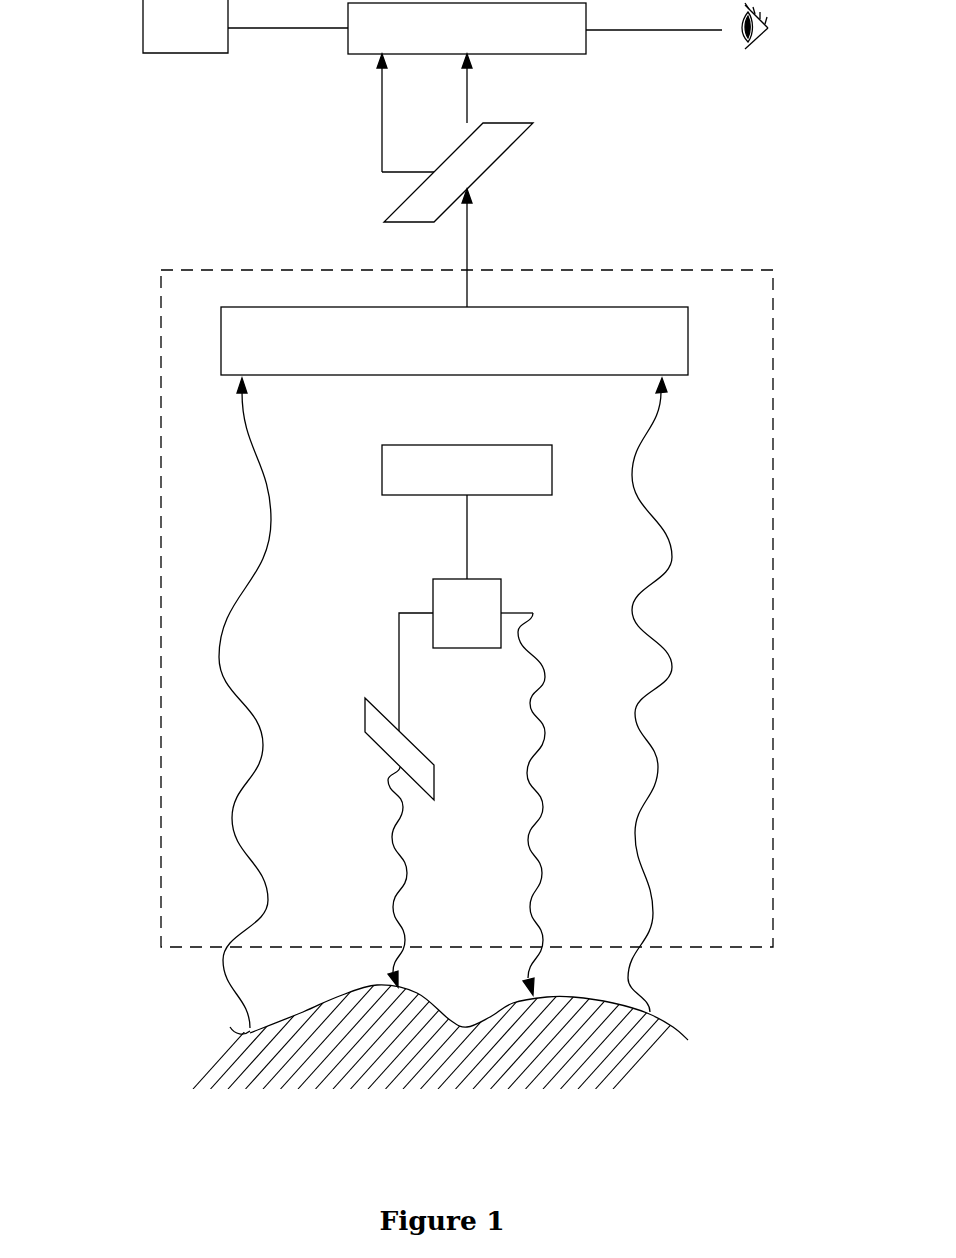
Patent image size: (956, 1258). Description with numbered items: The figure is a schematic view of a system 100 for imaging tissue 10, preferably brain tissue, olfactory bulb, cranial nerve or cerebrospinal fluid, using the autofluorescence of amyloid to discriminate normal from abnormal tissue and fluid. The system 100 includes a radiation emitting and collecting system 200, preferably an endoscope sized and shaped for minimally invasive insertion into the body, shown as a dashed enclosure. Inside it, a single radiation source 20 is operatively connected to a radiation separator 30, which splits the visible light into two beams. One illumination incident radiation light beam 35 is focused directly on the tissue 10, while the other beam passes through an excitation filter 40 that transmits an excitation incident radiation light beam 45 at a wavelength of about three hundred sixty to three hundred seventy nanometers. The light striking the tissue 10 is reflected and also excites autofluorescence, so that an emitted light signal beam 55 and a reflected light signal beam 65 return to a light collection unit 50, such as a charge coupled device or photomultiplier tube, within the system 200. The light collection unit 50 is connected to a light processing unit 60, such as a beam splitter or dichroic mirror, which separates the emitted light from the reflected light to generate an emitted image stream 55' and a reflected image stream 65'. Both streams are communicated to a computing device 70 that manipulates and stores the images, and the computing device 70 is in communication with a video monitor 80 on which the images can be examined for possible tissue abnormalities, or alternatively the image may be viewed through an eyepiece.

The system 100 is at (150, 143).
The radiation emitting and collecting system 200 is at (782, 266).
The video monitor 80 is at (185, 26).
The computing device 70 is at (558, 28).
The light processing unit 60 is at (510, 170).
The emitted image stream 55' is at (386, 113).
The reflected image stream 65' is at (486, 88).
The light collection unit 50 is at (454, 341).
The radiation source 20 is at (467, 470).
The radiation separator 30 is at (467, 613).
The excitation filter 40 is at (354, 706).
The emitted light signal beam 55 is at (256, 706).
The reflected light signal beam 65 is at (656, 695).
The excitation incident radiation light beam 45 is at (409, 877).
The illumination incident radiation light beam 35 is at (542, 804).
The tissue 10 is at (686, 1068).